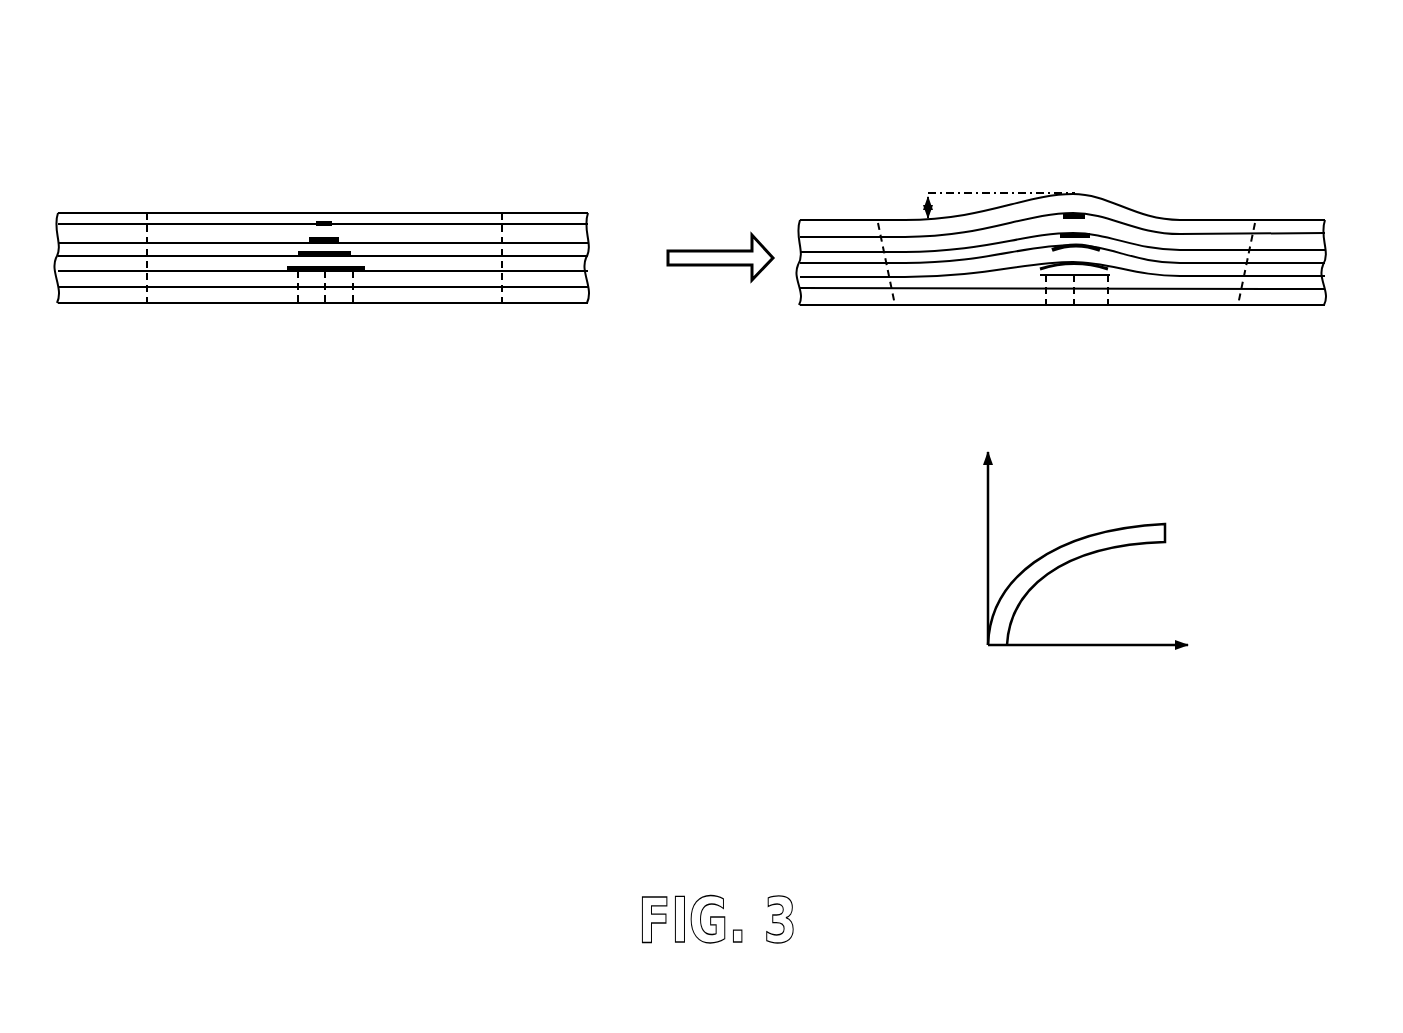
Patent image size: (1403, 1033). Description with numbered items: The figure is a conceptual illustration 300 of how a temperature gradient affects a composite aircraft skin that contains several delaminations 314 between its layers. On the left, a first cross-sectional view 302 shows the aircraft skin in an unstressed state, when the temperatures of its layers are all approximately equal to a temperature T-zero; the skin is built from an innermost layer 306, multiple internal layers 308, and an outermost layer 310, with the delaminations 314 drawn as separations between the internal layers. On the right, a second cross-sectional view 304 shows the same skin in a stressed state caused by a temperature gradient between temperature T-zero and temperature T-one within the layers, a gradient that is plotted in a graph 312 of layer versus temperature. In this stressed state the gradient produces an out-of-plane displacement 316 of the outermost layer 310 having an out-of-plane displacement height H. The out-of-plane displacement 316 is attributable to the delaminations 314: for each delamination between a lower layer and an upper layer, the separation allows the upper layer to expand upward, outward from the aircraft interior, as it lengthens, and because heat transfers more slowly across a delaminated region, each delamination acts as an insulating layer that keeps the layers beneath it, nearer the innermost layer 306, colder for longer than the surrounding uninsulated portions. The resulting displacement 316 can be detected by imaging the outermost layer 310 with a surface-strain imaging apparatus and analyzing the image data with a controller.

The conceptual illustration 300 is at (1272, 86).
The first cross-sectional view 302 is at (362, 148).
The second cross-sectional view 304 is at (1130, 155).
The innermost layer 306 is at (268, 305).
The internal layers 308 is at (416, 280).
The outermost layer 310 is at (416, 213).
The graph 312 is at (1168, 485).
The delaminations 314 is at (363, 278).
The out-of-plane displacement 316 is at (1050, 178).